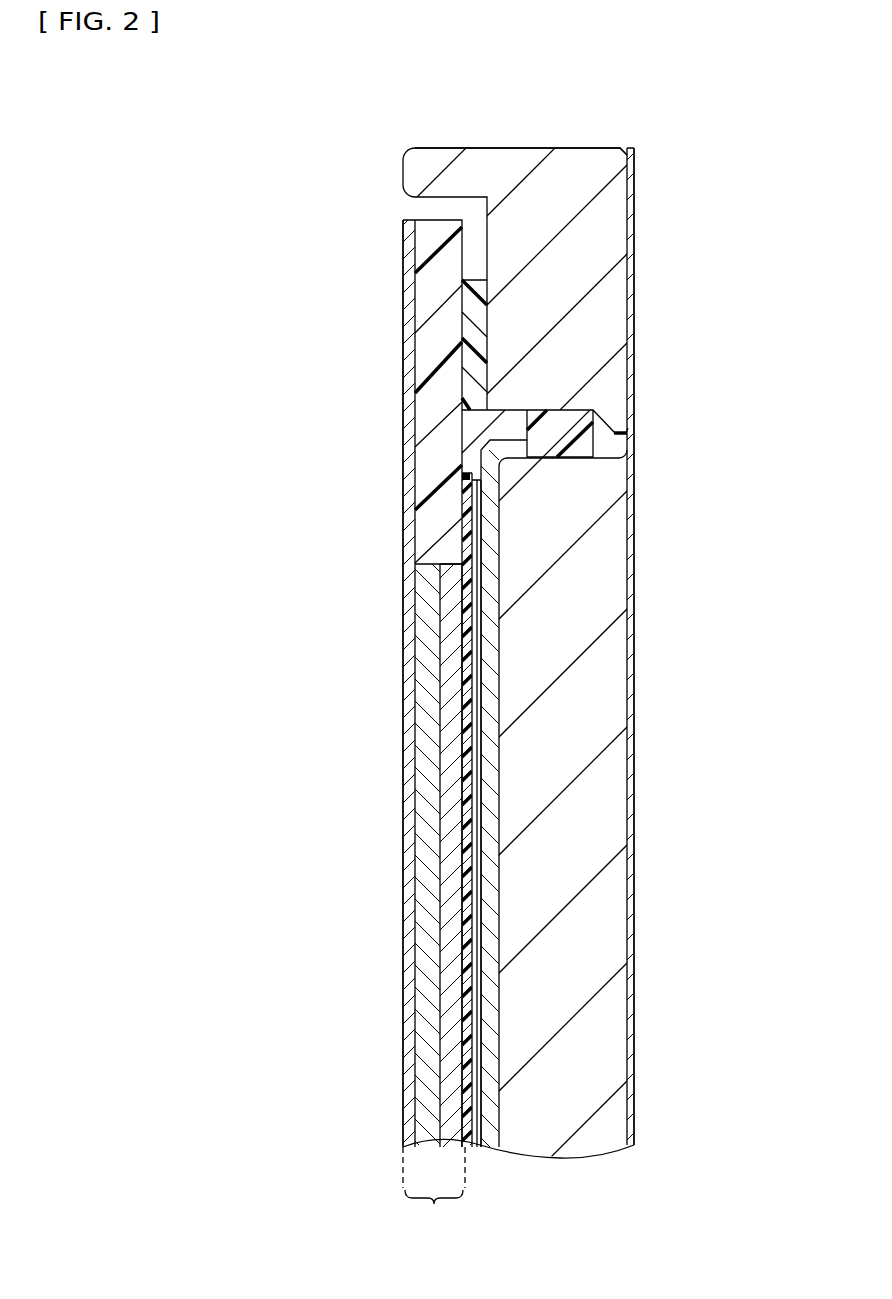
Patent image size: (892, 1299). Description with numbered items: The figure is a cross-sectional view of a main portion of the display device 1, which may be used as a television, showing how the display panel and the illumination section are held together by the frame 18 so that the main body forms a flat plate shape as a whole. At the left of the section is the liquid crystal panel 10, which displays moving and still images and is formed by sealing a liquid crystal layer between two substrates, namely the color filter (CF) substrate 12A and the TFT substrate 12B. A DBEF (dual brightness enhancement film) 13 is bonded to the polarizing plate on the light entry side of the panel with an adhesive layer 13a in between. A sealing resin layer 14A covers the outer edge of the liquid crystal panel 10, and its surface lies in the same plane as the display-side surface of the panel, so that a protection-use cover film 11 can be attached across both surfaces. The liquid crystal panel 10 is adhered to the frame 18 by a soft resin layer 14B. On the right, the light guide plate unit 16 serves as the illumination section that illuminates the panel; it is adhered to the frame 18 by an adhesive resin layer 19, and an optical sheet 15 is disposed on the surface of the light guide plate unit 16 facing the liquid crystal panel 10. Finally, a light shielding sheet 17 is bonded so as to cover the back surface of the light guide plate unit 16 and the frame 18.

The display device 1 is at (707, 116).
The liquid crystal panel 10 is at (434, 1193).
The protection-use cover film 11 is at (413, 456).
The color filter (CF) substrate 12A is at (425, 578).
The TFT substrate 12B is at (450, 650).
The DBEF (dual brightness enhancement film) 13 is at (463, 788).
The adhesive layer 13a is at (463, 715).
The sealing resin layer 14A is at (425, 292).
The soft resin layer 14B is at (473, 367).
The optical sheet 15 is at (493, 675).
The light guide plate unit 16 is at (608, 763).
The light shielding sheet 17 is at (633, 853).
The frame 18 is at (565, 157).
The adhesive resin layer 19 is at (560, 433).